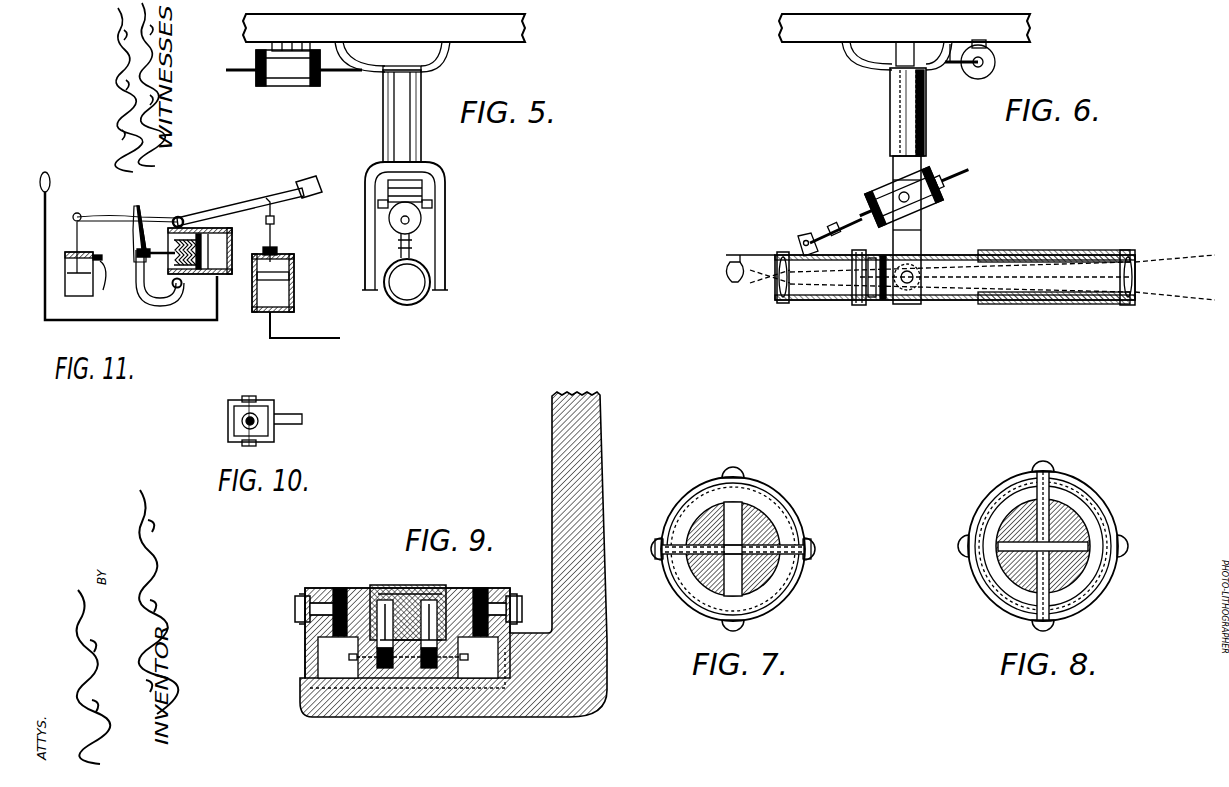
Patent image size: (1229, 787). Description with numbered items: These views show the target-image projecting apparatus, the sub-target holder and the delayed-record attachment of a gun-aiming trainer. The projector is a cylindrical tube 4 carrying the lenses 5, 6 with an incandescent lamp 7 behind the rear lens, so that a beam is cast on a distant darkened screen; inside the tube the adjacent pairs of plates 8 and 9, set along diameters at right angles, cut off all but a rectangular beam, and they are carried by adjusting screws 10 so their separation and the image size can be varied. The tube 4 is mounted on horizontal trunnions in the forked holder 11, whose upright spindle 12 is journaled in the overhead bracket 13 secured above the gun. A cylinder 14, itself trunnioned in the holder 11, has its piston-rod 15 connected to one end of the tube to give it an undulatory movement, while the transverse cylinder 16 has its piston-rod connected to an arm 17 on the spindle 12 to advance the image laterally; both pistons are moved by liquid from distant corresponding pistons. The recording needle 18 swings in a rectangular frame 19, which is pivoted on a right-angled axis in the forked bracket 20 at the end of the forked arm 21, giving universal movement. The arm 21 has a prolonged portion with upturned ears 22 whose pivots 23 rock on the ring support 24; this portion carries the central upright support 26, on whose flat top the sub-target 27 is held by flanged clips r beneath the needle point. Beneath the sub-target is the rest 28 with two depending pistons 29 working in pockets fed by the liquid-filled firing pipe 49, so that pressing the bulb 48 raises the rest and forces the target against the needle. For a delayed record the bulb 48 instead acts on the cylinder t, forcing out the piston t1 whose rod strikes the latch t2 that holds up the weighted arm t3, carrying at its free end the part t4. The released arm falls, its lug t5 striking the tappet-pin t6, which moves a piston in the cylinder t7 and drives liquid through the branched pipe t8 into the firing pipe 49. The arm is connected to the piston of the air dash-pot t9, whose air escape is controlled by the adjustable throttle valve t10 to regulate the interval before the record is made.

In FIG. 5, the cylindrical tube 4 is at (422, 300).
In FIG. 6, the cylindrical tube 4 is at (960, 300).
In FIG. 7, the cylindrical tube 4 is at (795, 508).
In FIG. 8, the cylindrical tube 4 is at (975, 578).
In FIG. 6, the lens 5 is at (995, 62).
In FIG. 6, the lens 6 is at (1136, 290).
In FIG. 6, the incandescent lamp 7 is at (730, 282).
In FIG. 6, the plates 8 is at (880, 300).
In FIG. 7, the plates 8 is at (700, 524).
In FIG. 8, the plates 8 is at (1002, 522).
In FIG. 6, the plates 9 is at (856, 305).
In FIG. 7, the plates 9 is at (738, 502).
In FIG. 8, the plates 9 is at (1070, 505).
In FIG. 7, the adjusting screws 10 is at (808, 534).
In FIG. 8, the adjusting screws 10 is at (1010, 608).
In FIG. 5, the forked holder 11 is at (445, 238).
In FIG. 6, the forked holder 11 is at (913, 240).
In FIG. 6, the upright spindle 12 is at (926, 133).
In FIG. 5, the overhead bracket 13 is at (421, 148).
In FIG. 6, the overhead bracket 13 is at (890, 112).
In FIG. 5, the cylinder 14 is at (422, 184).
In FIG. 6, the cylinder 14 is at (882, 185).
In FIG. 6, the piston-rod 15 is at (818, 240).
In FIG. 5, the transverse cylinder 16 is at (268, 88).
In FIG. 6, the arm 17 is at (955, 66).
In FIG. 10, the needle 18 is at (242, 426).
In FIG. 10, the rectangular frame 19 is at (238, 410).
In FIG. 10, the forked bracket 20 is at (272, 404).
In FIG. 9, the forked arm 21 is at (601, 450).
In FIG. 9, the upturned ears 22 is at (300, 650).
In FIG. 9, the pivots 23 is at (295, 606).
In FIG. 9, the ring support 24 is at (340, 588).
In FIG. 9, the upright support 26 is at (480, 588).
In FIG. 9, the sub-target 27 is at (440, 590).
In FIG. 9, the rest 28 is at (420, 585).
In FIG. 9, the pistons 29 is at (393, 660).
In FIG. 11, the bulb 48 is at (50, 182).
In FIG. 9, the firing pipe 49 is at (305, 690).
In FIG. 9, the flanged clips r is at (380, 590).
In FIG. 11, the cylinder t is at (232, 248).
In FIG. 11, the piston t1 is at (200, 258).
In FIG. 11, the latch t2 is at (132, 272).
In FIG. 11, the weighted arm t3 is at (214, 210).
In FIG. 11, the weight t4 is at (306, 180).
In FIG. 11, the lug t5 is at (262, 196).
In FIG. 11, the tappet-pin t6 is at (274, 220).
In FIG. 11, the cylinder t7 is at (294, 288).
In FIG. 11, the branched pipe t8 is at (318, 338).
In FIG. 11, the air dash-pot t9 is at (82, 252).
In FIG. 11, the throttle valve t10 is at (106, 280).